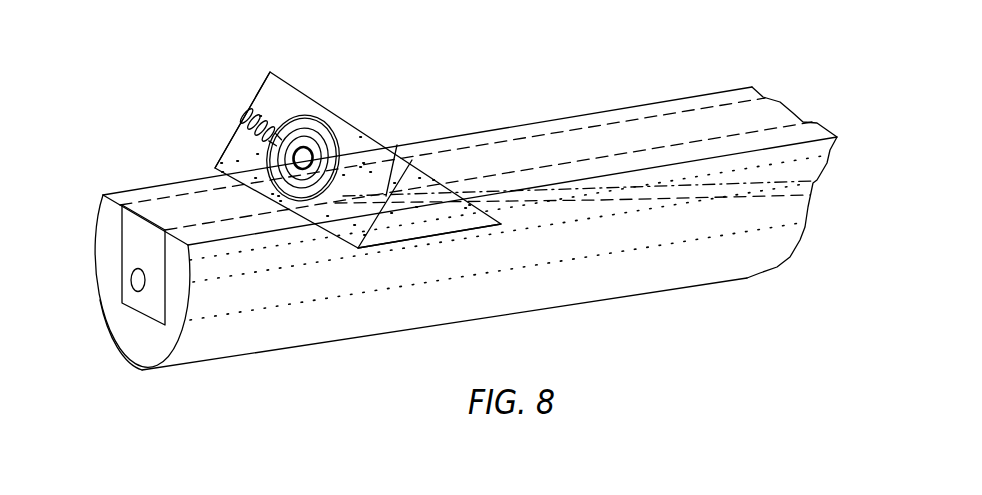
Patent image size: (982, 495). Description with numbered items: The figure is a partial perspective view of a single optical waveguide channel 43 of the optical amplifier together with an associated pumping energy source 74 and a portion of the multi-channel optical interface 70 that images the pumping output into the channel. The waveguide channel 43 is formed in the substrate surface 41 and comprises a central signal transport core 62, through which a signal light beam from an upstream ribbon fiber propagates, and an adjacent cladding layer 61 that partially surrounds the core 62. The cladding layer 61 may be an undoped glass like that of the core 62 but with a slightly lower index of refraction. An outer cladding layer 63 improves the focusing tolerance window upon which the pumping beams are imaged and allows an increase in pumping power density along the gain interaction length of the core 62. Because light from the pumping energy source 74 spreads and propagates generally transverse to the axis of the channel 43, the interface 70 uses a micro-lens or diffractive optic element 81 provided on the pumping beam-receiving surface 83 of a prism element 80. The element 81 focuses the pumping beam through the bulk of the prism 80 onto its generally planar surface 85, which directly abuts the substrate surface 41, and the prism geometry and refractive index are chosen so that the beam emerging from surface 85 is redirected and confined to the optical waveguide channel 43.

The substrate surface 41 is at (600, 118).
The optical waveguide channel 43 is at (757, 209).
The cladding layer 61 is at (127, 218).
The core 62 is at (132, 278).
The outer cladding layer 63 is at (113, 332).
The multi-channel optical interface 70 is at (388, 94).
The pumping energy source 74 is at (243, 118).
The prism element 80 is at (259, 100).
The micro-lens or diffractive optic element 81 is at (318, 124).
The pumping beam-receiving surface 83 is at (237, 153).
The planar surface 85 is at (423, 245).